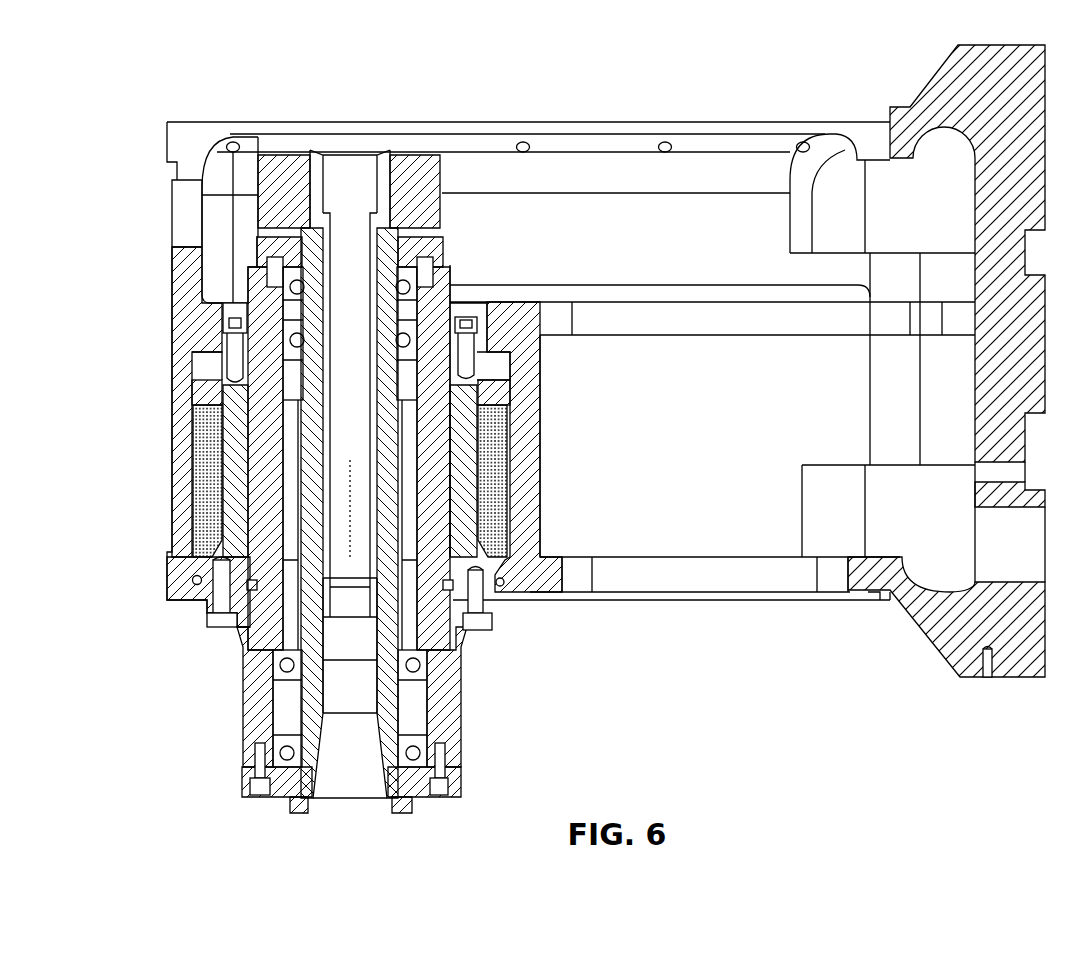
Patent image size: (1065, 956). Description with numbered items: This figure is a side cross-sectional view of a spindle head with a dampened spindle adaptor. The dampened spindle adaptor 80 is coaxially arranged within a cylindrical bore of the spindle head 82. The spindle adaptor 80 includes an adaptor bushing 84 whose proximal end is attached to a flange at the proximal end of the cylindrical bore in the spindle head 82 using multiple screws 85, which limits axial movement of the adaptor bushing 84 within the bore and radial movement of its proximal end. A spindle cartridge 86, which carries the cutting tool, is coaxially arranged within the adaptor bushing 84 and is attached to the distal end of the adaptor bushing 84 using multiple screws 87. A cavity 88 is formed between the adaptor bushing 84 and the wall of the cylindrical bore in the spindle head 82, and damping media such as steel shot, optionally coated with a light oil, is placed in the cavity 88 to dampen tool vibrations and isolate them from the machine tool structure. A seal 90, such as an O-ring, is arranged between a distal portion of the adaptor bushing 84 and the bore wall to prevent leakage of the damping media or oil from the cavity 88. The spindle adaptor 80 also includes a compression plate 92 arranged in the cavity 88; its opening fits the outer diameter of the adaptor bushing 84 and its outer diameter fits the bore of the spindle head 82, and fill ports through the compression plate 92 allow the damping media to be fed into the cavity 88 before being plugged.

The dampened spindle adaptor 80 is at (185, 637).
The spindle head 82 is at (958, 80).
The adaptor bushing 84 is at (455, 512).
The screws 85 is at (233, 338).
The spindle cartridge 86 is at (210, 752).
The screws 87 is at (477, 598).
The cavity 88 is at (205, 473).
The seal 90 is at (196, 582).
The compression plate 92 is at (208, 392).